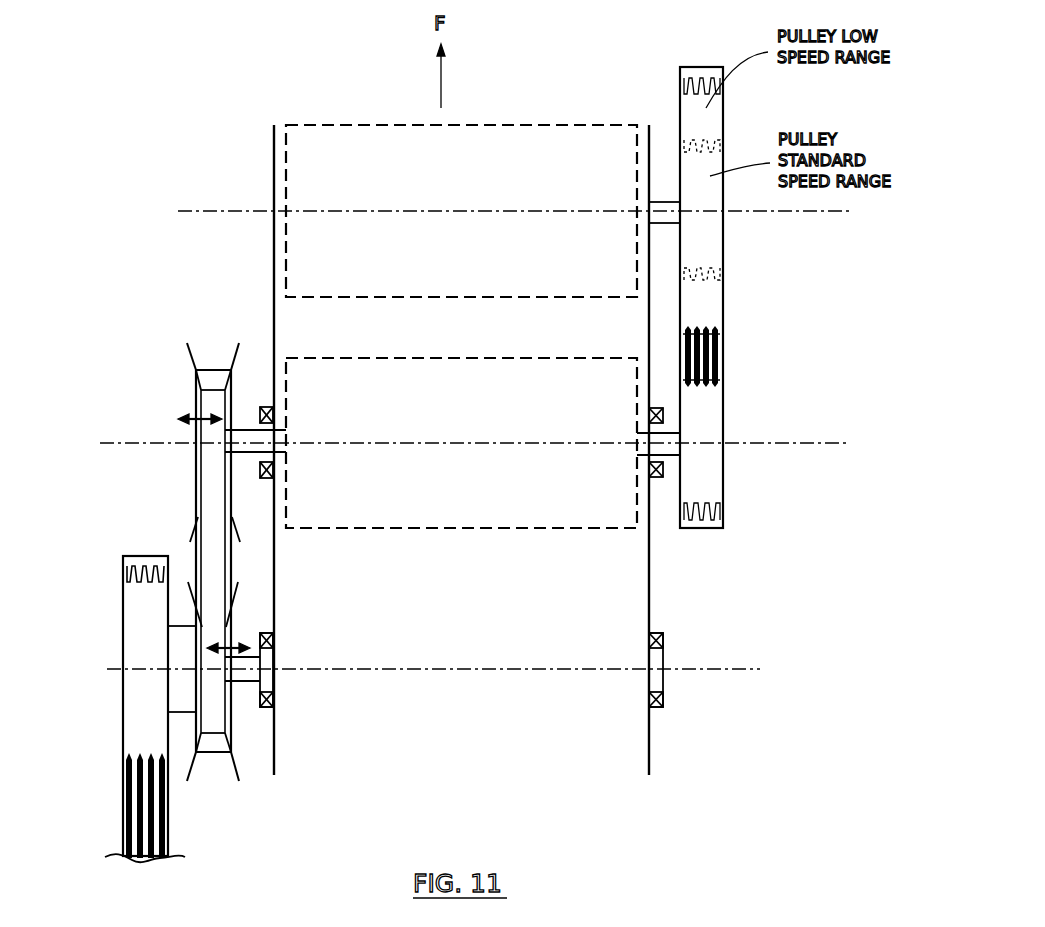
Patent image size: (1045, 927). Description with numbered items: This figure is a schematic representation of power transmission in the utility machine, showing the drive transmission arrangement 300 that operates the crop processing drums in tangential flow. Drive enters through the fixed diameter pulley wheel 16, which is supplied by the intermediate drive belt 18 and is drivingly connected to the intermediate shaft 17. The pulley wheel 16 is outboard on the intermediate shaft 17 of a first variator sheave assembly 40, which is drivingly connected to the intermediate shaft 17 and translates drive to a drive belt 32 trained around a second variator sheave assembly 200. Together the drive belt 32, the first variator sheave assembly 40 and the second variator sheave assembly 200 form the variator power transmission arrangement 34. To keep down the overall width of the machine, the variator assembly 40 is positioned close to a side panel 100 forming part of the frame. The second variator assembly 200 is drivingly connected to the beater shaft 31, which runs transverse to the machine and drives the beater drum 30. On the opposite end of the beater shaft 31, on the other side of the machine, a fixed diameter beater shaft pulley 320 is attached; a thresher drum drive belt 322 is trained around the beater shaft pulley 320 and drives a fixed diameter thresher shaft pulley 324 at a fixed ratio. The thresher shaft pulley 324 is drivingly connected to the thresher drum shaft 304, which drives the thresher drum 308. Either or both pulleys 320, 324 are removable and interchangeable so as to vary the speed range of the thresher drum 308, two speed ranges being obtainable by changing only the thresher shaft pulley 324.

The drive transmission arrangement 300 is at (184, 174).
The side panel 100 is at (273, 160).
The thresher drum 308 is at (330, 126).
The thresher drum shaft 304 is at (595, 210).
The thresher shaft pulley 324 is at (718, 229).
The thresher drum drive belt 322 is at (711, 352).
The beater shaft pulley 320 is at (720, 482).
The beater shaft 31 is at (571, 441).
The beater drum 30 is at (574, 530).
The intermediate shaft 17 is at (576, 669).
The second variator sheave assembly 200 is at (205, 358).
The power transmission arrangement 34 is at (166, 458).
The drive belt 32 is at (207, 550).
The fixed diameter pulley wheel 16 is at (132, 722).
The intermediate drive belt 18 is at (128, 826).
The first variator sheave assembly 40 is at (246, 744).